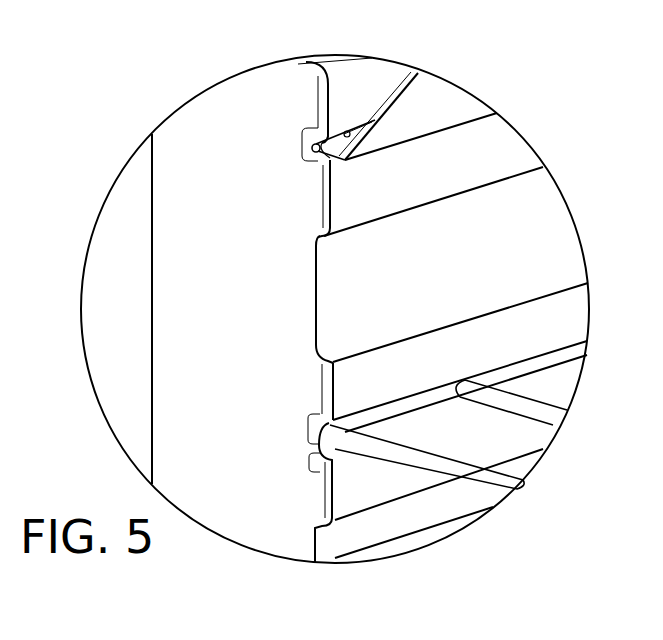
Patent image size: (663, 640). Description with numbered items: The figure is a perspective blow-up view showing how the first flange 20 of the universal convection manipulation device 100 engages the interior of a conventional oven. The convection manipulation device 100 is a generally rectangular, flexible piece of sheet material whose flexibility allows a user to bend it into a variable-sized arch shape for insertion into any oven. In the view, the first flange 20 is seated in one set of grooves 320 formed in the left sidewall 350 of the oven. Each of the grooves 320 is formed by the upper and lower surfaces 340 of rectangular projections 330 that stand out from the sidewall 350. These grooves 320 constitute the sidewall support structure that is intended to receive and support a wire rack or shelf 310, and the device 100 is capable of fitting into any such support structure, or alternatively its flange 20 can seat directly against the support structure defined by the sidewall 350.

The first flange 20 is at (325, 138).
The universal convection manipulation device 100 is at (412, 90).
The wire rack or shelf 310 is at (482, 476).
The grooves 320 is at (262, 152).
The rectangular projections 330 is at (360, 90).
The upper and lower surfaces 340 is at (347, 134).
The left sidewall 350 is at (348, 297).